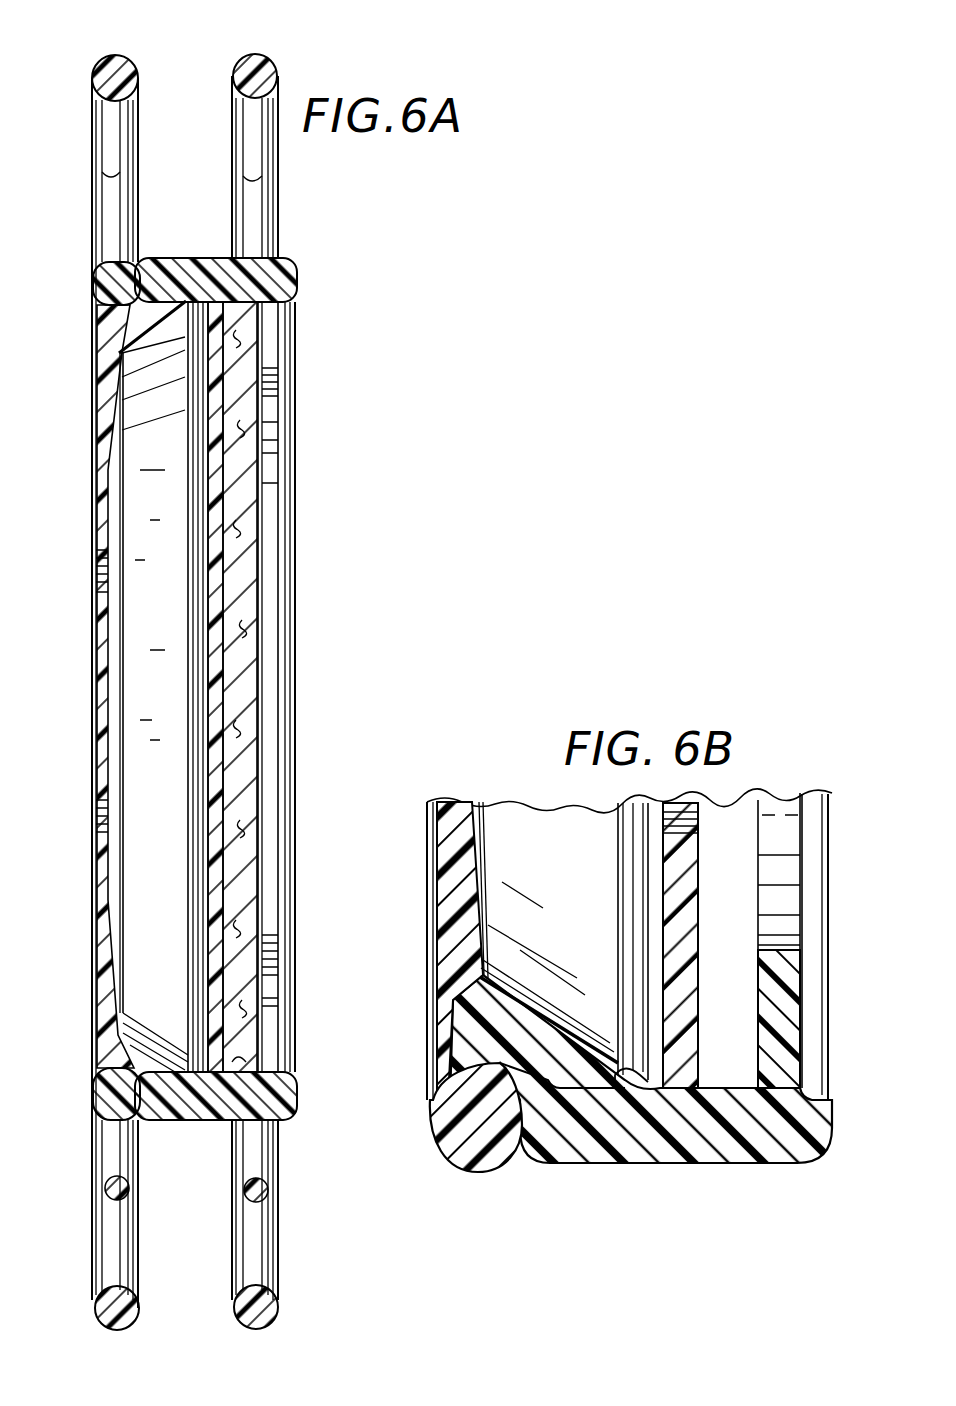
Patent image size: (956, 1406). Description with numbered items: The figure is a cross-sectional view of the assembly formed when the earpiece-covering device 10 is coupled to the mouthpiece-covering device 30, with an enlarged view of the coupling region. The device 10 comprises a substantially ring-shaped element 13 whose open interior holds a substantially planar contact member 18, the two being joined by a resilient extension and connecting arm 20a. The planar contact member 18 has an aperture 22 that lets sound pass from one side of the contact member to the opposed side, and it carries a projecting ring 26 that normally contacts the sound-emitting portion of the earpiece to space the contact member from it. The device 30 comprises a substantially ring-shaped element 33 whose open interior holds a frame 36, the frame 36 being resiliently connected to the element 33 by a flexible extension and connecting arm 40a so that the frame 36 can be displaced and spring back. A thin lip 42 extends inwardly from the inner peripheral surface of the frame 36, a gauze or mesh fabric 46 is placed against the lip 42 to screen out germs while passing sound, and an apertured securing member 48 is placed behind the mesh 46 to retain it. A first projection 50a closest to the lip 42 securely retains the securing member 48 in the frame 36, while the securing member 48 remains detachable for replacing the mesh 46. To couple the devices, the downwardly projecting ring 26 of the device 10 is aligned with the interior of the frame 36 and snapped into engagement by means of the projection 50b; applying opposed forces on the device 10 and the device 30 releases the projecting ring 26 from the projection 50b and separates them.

In FIG. 6A, the device 10 is at (134, 41).
In FIG. 6A, the device 30 is at (292, 34).
In FIG. 6A, the ring-shaped element 13 is at (92, 80).
In FIG. 6A, the ring-shaped element 33 is at (278, 78).
In FIG. 6A, the frame element 36 is at (295, 278).
In FIG. 6B, the frame element 36 is at (795, 1028).
In FIG. 6A, the planar contact member 18 is at (105, 332).
In FIG. 6A, the aperture 22 is at (100, 606).
In FIG. 6A, the projecting ring 26 is at (138, 1043).
In FIG. 6B, the projecting ring 26 is at (518, 1000).
In FIG. 6A, the thin lip 42 is at (278, 335).
In FIG. 6A, the gauze or mesh fabric 46 is at (246, 558).
In FIG. 6B, the gauze or mesh fabric 46 is at (742, 938).
In FIG. 6A, the securing member 48 is at (273, 1043).
In FIG. 6B, the securing member 48 is at (688, 884).
In FIG. 6A, the first projection 50a is at (240, 1062).
In FIG. 6B, the first projection 50a is at (621, 1045).
In FIG. 6B, the projection 50b is at (433, 1113).
In FIG. 6A, the extension and connecting arm 20a is at (108, 1186).
In FIG. 6A, the extension and connecting arm 40a is at (268, 1184).